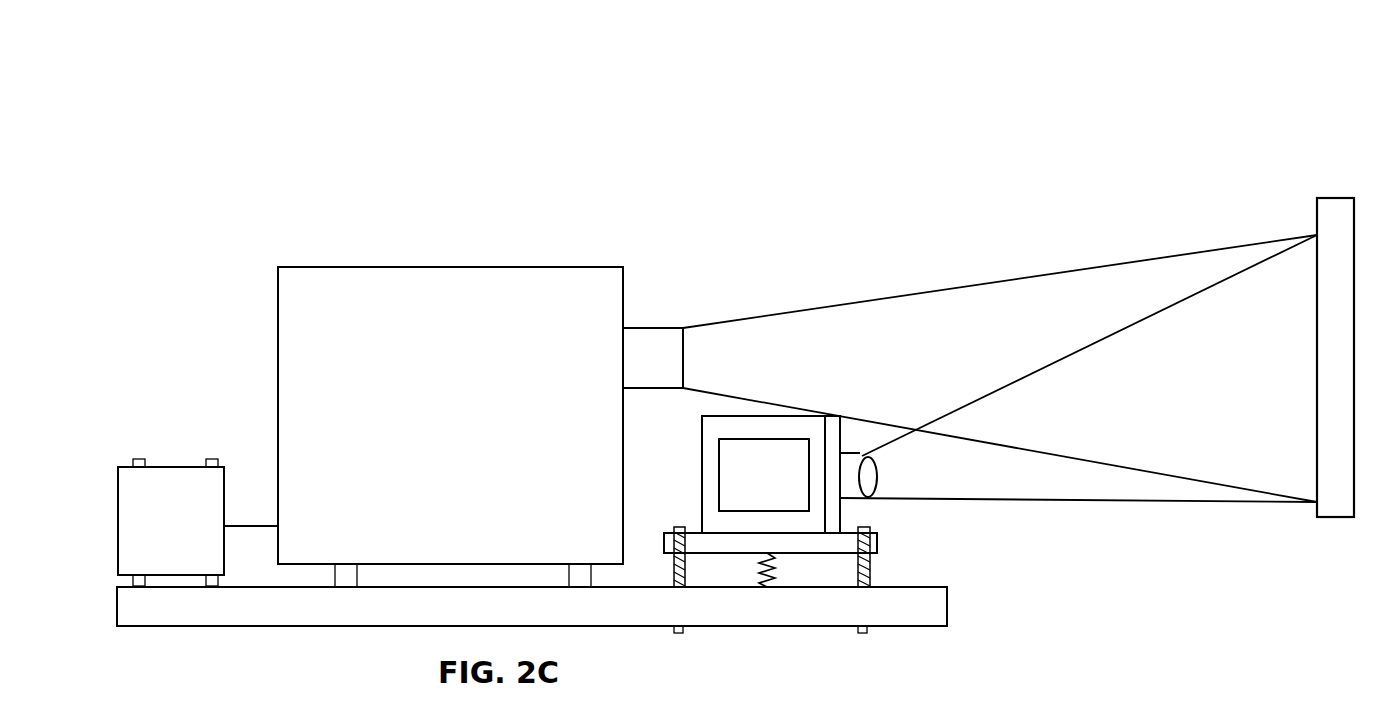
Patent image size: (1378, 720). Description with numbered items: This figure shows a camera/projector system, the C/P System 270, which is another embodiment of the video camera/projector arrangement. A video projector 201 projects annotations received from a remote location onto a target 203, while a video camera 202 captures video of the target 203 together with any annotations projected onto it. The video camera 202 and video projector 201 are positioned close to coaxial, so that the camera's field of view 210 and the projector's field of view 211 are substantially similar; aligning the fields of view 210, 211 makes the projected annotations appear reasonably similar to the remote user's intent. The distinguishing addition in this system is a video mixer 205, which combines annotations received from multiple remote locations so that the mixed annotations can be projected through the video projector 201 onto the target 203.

The C/P System 270 is at (544, 97).
The video projector 201 is at (523, 267).
The video camera 202 is at (794, 550).
The target 203 is at (1337, 198).
The video mixer 205 is at (155, 462).
The field of view 210 is at (901, 440).
The field of view 211 is at (895, 297).